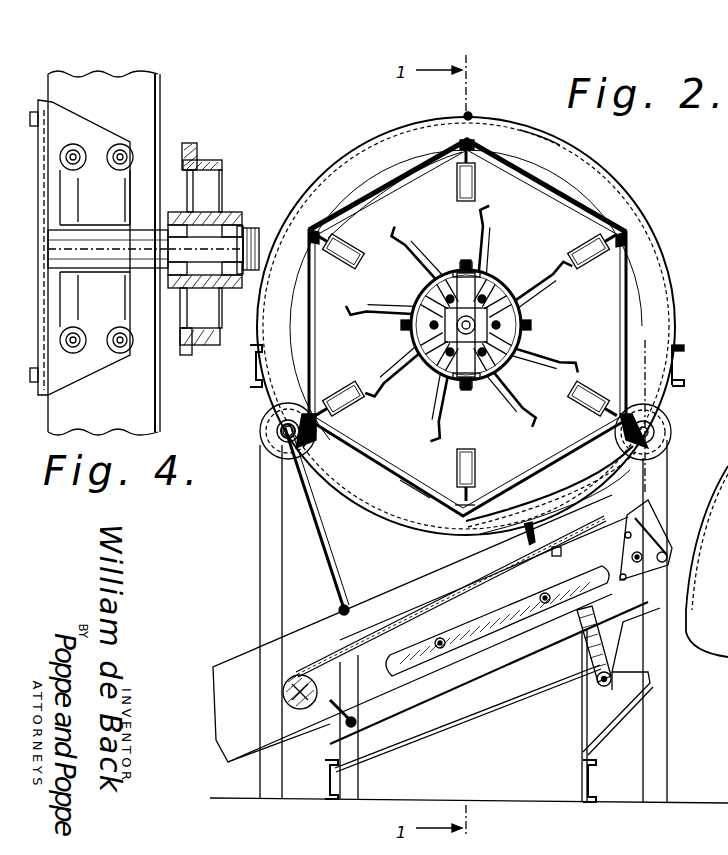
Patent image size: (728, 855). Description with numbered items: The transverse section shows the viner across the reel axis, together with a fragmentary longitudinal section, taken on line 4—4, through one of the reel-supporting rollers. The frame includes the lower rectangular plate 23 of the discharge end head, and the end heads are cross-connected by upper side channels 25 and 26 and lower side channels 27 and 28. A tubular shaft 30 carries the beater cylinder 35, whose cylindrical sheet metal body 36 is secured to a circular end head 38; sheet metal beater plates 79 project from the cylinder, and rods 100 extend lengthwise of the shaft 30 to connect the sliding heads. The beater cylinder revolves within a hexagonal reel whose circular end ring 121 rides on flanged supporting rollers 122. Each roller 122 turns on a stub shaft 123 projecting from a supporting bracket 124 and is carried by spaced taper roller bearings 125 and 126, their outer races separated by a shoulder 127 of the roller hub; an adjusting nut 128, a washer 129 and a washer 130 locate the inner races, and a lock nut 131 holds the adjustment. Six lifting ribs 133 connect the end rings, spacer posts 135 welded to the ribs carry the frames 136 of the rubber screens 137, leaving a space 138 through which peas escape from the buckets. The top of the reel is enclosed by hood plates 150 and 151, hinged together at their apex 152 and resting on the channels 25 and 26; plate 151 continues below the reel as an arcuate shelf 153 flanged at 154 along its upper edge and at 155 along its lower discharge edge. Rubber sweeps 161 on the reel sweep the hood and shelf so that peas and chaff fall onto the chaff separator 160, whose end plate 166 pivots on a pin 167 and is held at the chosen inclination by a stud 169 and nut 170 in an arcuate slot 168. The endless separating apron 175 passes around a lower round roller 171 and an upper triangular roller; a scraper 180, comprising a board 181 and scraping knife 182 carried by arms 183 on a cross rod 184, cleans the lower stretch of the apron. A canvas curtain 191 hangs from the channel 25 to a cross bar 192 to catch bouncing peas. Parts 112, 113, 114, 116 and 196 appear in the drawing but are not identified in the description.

In FIG. 2, the section line 4— 4 is at (656, 368).
In FIG. 4, the lower rectangular plate 23 is at (160, 382).
In FIG. 2, the upper longitudinal side channel 25 is at (256, 355).
In FIG. 2, the upper longitudinal side channel 26 is at (686, 378).
In FIG. 2, the lower side channel 27 is at (330, 782).
In FIG. 2, the lower side channel 28 is at (590, 785).
In FIG. 2, the tubular shaft 30 is at (470, 328).
In FIG. 2, the beater cylinder 35 is at (443, 264).
In FIG. 2, the cylindrical sheet metal body 36 is at (408, 312).
In FIG. 2, the circular end head 38 is at (485, 283).
In FIG. 2, the sheet metal beater plate 79 is at (506, 230).
In FIG. 2, the rod 100 is at (480, 378).
In FIG. 2, the bolt 112 is at (631, 558).
In FIG. 2, the bracket plate 113 is at (644, 508).
In FIG. 2, the housing wall 114 is at (688, 532).
In FIG. 2, the conveyor slat 116 is at (392, 664).
In FIG. 2, the circular end ring 121 is at (555, 178).
In FIG. 2, the flanged supporting roller 122 is at (250, 428).
In FIG. 4, the flanged supporting roller 122 is at (200, 148).
In FIG. 2, the stub shaft 123 is at (285, 434).
In FIG. 4, the stub shaft 123 is at (205, 249).
In FIG. 4, the supporting bracket 124 is at (85, 136).
In FIG. 4, the taper roller bearing 125 is at (200, 218).
In FIG. 4, the taper roller bearing 126 is at (216, 310).
In FIG. 4, the shoulder 127 is at (214, 226).
In FIG. 4, the adjusting nut 128 is at (222, 238).
In FIG. 4, the washer 129 is at (222, 290).
In FIG. 4, the washer 130 is at (168, 246).
In FIG. 4, the lock nut 131 is at (258, 230).
In FIG. 2, the lifting rib 133 is at (456, 184).
In FIG. 2, the spacer post 135 is at (630, 272).
In FIG. 2, the screen frame 136 is at (632, 240).
In FIG. 2, the rubber screen 137 is at (316, 282).
In FIG. 2, the space 138 is at (321, 238).
In FIG. 2, the sheet metal hood plate 150 is at (358, 152).
In FIG. 2, the sheet metal hood plate 151 is at (538, 128).
In FIG. 2, the hinge 152 is at (470, 112).
In FIG. 2, the arcuate shelf 153 is at (582, 494).
In FIG. 2, the upper edge flange 154 is at (685, 349).
In FIG. 2, the lower edge flange 155 is at (524, 534).
In FIG. 2, the chaff separator 160 is at (316, 640).
In FIG. 2, the sweep 161 is at (446, 136).
In FIG. 2, the end plate 166 is at (470, 680).
In FIG. 2, the pivot pin 167 is at (552, 552).
In FIG. 2, the arcuate slot 168 is at (352, 716).
In FIG. 2, the stud 169 is at (338, 724).
In FIG. 2, the nut 170 is at (318, 745).
In FIG. 2, the lower round horizontal roller 171 is at (284, 696).
In FIG. 2, the endless separating apron 175 is at (420, 612).
In FIG. 2, the scraper 180 is at (564, 620).
In FIG. 2, the horizontal board 181 is at (600, 634).
In FIG. 2, the scraping knife 182 is at (594, 618).
In FIG. 2, the arm 183 is at (568, 672).
In FIG. 2, the cross rod 184 is at (594, 686).
In FIG. 2, the canvas curtain 191 is at (326, 540).
In FIG. 2, the cross bar 192 is at (340, 607).
In FIG. 2, the housing bottom 196 is at (458, 520).